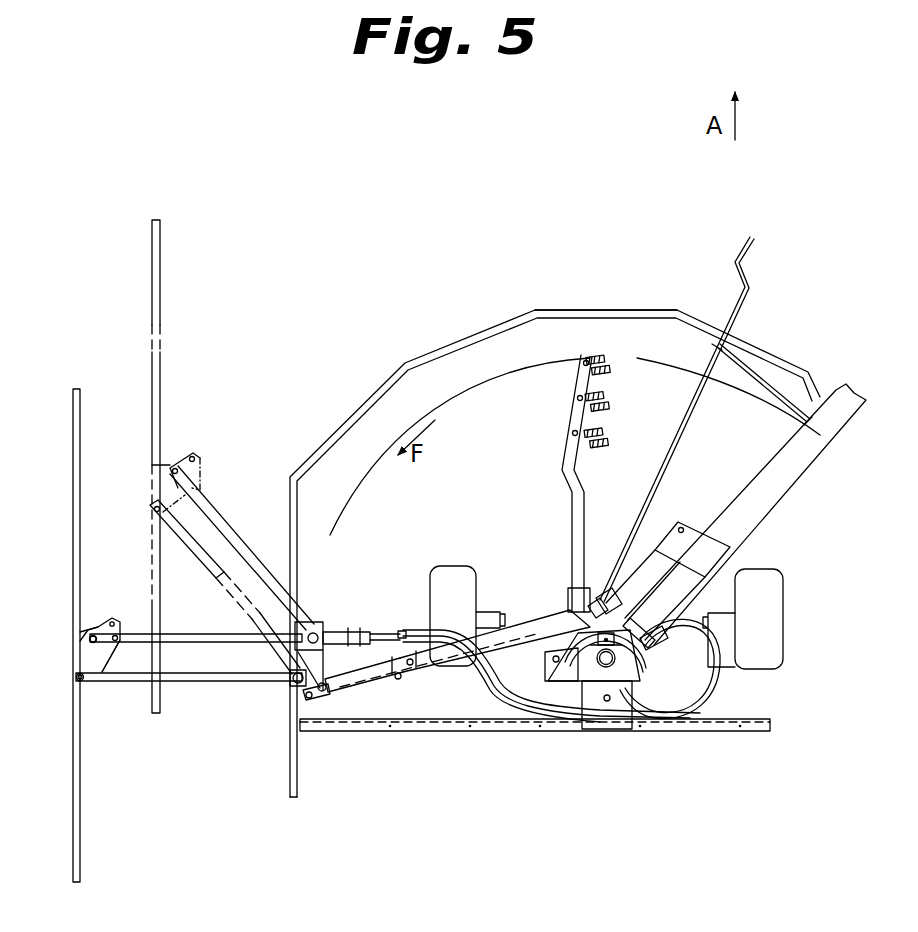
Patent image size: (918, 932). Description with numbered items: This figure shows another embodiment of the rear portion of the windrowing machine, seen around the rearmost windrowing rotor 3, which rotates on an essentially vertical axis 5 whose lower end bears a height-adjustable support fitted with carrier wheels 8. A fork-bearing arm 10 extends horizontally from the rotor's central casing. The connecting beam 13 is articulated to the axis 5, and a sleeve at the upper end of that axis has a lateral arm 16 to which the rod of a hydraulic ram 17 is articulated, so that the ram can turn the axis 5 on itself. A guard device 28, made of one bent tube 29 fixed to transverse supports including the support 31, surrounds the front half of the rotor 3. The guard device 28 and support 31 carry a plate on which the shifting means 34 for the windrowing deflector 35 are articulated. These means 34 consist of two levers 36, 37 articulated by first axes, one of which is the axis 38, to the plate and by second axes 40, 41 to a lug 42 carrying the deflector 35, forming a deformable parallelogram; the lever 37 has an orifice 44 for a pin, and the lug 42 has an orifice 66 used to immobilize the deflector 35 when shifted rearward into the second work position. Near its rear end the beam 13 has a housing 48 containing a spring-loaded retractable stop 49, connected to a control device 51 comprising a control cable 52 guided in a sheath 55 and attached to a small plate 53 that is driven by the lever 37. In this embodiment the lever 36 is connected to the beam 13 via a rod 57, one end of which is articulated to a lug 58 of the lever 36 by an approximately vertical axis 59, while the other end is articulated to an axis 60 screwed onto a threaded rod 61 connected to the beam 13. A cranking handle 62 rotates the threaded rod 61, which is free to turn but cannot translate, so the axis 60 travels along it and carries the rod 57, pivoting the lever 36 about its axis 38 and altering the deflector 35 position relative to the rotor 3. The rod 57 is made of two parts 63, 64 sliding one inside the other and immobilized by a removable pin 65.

The windrowing rotor 3 is at (622, 355).
The vertical axis 5 is at (607, 664).
The carrier wheel 8 is at (763, 612).
The arm 10 is at (570, 452).
The connecting beam 13 is at (788, 468).
The lateral arm 16 is at (568, 672).
The hydraulic ram 17 is at (661, 549).
The guard device 28 is at (543, 308).
The bent tube 29 is at (437, 355).
The transverse support 31 is at (542, 731).
The shifting means 34 is at (186, 684).
The windrowing deflector 35 is at (75, 422).
The lever 36 is at (215, 683).
The lever 37 is at (183, 636).
The first axis 38 is at (300, 688).
The second axis 40 is at (82, 683).
The second axis 41 is at (86, 638).
The lug 42 is at (79, 667).
The orifice 44 is at (112, 644).
The housing 48 is at (650, 638).
The retractable stop 49 is at (634, 645).
The control device 51 is at (376, 626).
The control cable 52 is at (328, 628).
The small plate 53 is at (303, 625).
The sheath 55 is at (708, 660).
The rod 57 is at (428, 668).
The lug 58 is at (305, 692).
The vertical axis 59 is at (330, 690).
The vertical axis 60 is at (568, 616).
The threaded rod 61 is at (592, 596).
The cranking handle 62 is at (662, 455).
The rod part 63 is at (363, 675).
The rod part 64 is at (527, 627).
The pin 65 is at (410, 655).
The orifice 66 is at (110, 620).